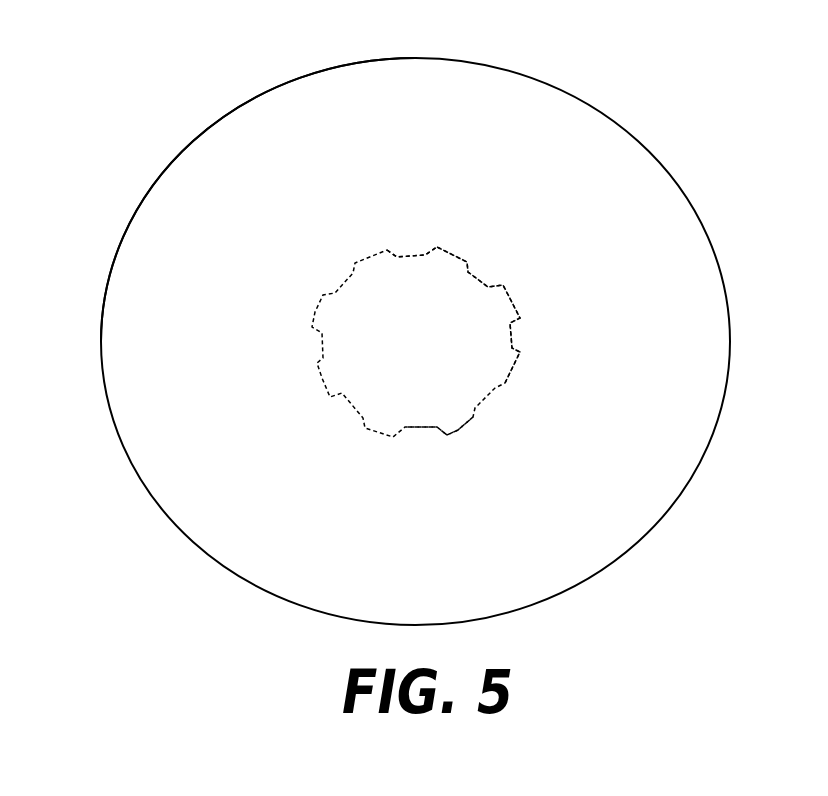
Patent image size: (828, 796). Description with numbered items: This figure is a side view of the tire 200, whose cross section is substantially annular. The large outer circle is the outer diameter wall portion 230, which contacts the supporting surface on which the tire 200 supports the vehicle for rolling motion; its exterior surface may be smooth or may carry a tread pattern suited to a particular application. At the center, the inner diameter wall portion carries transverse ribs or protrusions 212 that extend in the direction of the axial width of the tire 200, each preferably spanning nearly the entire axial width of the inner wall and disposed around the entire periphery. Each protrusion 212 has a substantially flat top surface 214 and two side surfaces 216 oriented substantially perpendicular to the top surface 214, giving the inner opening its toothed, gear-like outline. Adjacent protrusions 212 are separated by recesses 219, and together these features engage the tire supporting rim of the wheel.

The tire 200 is at (519, 50).
The outer diameter wall portion 230 is at (247, 103).
The protrusion 212 is at (308, 352).
The flat top surface 214 is at (412, 256).
The side surface 216 is at (467, 263).
The recess 219 is at (455, 432).